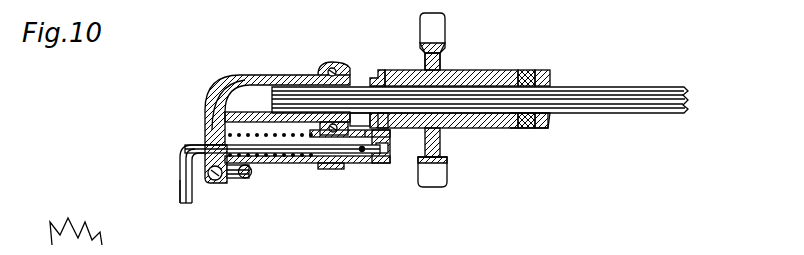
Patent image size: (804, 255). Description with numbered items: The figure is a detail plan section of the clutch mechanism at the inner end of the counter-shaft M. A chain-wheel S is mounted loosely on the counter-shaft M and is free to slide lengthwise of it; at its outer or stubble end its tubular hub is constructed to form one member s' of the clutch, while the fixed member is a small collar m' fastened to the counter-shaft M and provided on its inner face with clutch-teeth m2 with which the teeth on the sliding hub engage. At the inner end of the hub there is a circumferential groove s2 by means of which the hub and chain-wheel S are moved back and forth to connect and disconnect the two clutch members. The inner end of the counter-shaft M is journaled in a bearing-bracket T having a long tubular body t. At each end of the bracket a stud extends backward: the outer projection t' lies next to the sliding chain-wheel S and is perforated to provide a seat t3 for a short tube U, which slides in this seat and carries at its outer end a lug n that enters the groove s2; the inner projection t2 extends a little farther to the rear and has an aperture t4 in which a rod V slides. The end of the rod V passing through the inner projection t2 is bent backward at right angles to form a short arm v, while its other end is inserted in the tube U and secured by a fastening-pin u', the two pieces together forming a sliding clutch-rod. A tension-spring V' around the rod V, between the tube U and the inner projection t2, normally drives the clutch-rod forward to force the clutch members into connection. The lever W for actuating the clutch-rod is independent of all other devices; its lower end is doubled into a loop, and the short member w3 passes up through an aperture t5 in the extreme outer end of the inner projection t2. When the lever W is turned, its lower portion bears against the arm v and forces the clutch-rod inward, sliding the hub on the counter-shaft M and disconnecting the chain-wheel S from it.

The bearing-bracket T is at (285, 75).
The tubular body t is at (228, 89).
The aperture t4 is at (213, 149).
The counter-shaft M is at (641, 87).
The chain-wheel S is at (441, 48).
The clutch member s' is at (522, 83).
The collar m' is at (565, 89).
The clutch-teeth m2 is at (528, 128).
The circumferential groove s2 is at (372, 70).
The lug n is at (404, 128).
The tube U is at (398, 128).
The fastening-pin u' is at (369, 181).
The outer projection t' is at (353, 164).
The seat t3 is at (330, 169).
The tension-spring V' is at (282, 166).
The rod V is at (163, 174).
The arm v is at (180, 194).
The inner projection t2 is at (218, 183).
The aperture t5 is at (211, 179).
The lever W is at (250, 173).
The short member w3 is at (243, 179).